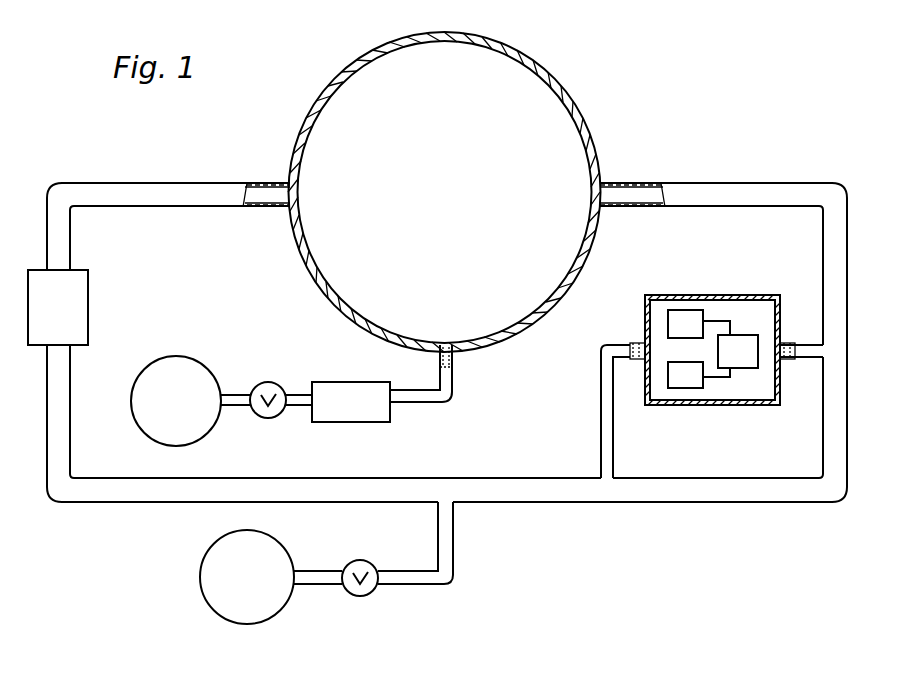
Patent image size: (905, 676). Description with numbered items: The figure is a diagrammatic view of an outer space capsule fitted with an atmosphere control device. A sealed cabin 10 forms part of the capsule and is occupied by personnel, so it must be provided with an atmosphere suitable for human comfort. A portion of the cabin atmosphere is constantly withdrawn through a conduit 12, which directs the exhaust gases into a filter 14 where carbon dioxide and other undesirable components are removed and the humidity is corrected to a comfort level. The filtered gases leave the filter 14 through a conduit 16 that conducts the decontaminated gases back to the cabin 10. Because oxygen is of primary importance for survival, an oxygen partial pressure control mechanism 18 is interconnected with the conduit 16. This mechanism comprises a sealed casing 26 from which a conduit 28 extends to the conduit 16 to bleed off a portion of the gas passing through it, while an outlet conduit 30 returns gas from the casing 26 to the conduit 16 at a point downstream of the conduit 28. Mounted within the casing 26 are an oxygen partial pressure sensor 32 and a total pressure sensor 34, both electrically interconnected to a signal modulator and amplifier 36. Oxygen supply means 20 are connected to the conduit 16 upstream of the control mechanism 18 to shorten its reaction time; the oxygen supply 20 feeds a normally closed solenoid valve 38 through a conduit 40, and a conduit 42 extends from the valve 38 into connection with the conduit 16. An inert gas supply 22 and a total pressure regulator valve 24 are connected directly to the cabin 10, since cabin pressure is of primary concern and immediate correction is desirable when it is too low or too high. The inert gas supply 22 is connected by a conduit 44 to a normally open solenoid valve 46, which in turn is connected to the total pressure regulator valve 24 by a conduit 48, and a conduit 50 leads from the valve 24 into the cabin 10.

The sealed cabin 10 is at (297, 135).
The conduit 12 is at (149, 183).
The filter 14 is at (88, 302).
The conduit 16 is at (70, 397).
The oxygen partial pressure control mechanism 18 is at (710, 349).
The oxygen supply means 20 is at (209, 556).
The inert gas supply 22 is at (173, 356).
The total pressure regulator valve 24 is at (335, 422).
The sealed casing 26 is at (675, 295).
The conduit 28 is at (601, 427).
The outlet conduit 30 is at (802, 358).
The oxygen partial pressure sensor 32 is at (668, 316).
The total pressure sensor 34 is at (669, 389).
The signal modulator and amplifier 36 is at (746, 334).
The normally closed solenoid valve 38 is at (350, 595).
The conduit 40 is at (321, 571).
The conduit 42 is at (453, 563).
The conduit 44 is at (238, 395).
The normally open solenoid valve 46 is at (256, 413).
The conduit 48 is at (298, 395).
The conduit 50 is at (443, 404).